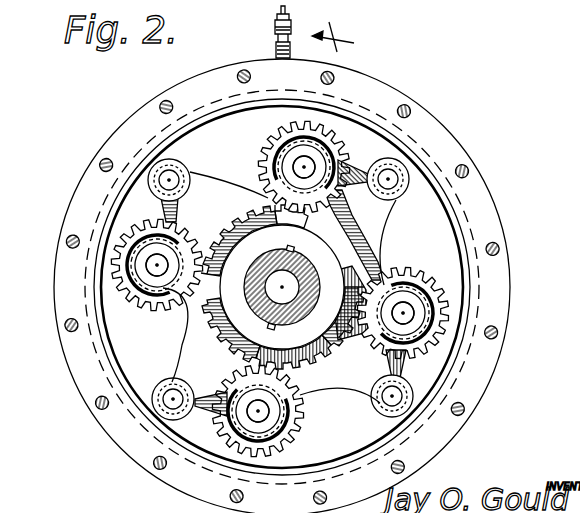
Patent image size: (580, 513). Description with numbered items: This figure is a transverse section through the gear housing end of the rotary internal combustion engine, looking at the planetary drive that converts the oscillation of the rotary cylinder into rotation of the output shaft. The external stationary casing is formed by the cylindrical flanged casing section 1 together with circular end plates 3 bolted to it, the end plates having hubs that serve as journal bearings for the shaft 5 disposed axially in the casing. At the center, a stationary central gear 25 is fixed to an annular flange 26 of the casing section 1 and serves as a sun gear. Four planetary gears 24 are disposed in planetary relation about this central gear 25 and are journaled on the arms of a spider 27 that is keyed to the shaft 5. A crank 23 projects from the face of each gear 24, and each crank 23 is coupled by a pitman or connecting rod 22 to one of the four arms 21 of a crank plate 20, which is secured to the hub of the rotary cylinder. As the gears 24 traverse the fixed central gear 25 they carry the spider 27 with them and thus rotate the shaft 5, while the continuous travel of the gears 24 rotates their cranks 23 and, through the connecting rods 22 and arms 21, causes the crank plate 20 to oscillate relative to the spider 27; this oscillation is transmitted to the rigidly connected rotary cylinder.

The cylindrical flanged casing section 1 is at (459, 206).
The circular end plate 3 is at (341, 40).
The shaft 5 is at (272, 252).
The crank plate 20 is at (380, 243).
The arm of the crank plate 21 is at (226, 172).
The pitman or connecting rod 22 is at (163, 209).
The crank 23 is at (268, 171).
The planetary gear 24 is at (262, 145).
The central gear 25 is at (365, 340).
The annular flange 26 is at (275, 27).
The spider 27 is at (238, 340).